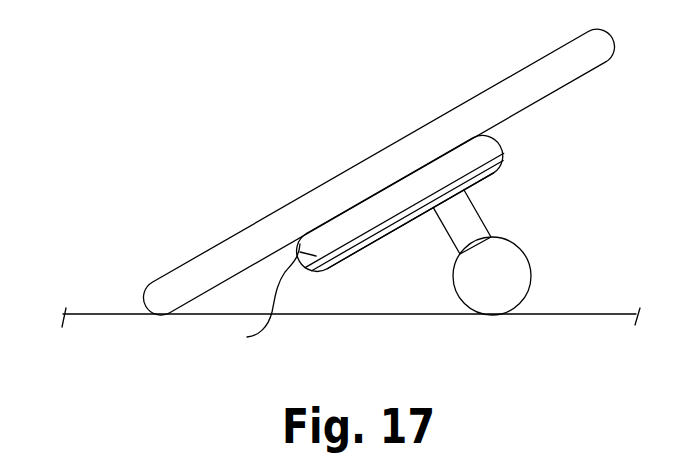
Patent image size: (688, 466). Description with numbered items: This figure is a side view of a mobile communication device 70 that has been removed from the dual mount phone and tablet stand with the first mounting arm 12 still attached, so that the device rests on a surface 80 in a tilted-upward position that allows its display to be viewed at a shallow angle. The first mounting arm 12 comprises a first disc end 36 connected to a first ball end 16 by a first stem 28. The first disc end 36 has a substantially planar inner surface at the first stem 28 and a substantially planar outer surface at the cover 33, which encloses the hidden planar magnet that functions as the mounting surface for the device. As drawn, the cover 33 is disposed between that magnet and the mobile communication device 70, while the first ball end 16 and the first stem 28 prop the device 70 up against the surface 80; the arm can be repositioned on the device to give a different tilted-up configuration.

The mobile communication device 70 is at (541, 60).
The first mounting arm 12 is at (503, 156).
The first disc end 36 is at (388, 243).
The first stem 28 is at (477, 223).
The first ball end 16 is at (531, 277).
The cover 33 is at (249, 303).
The surface 80 is at (93, 314).